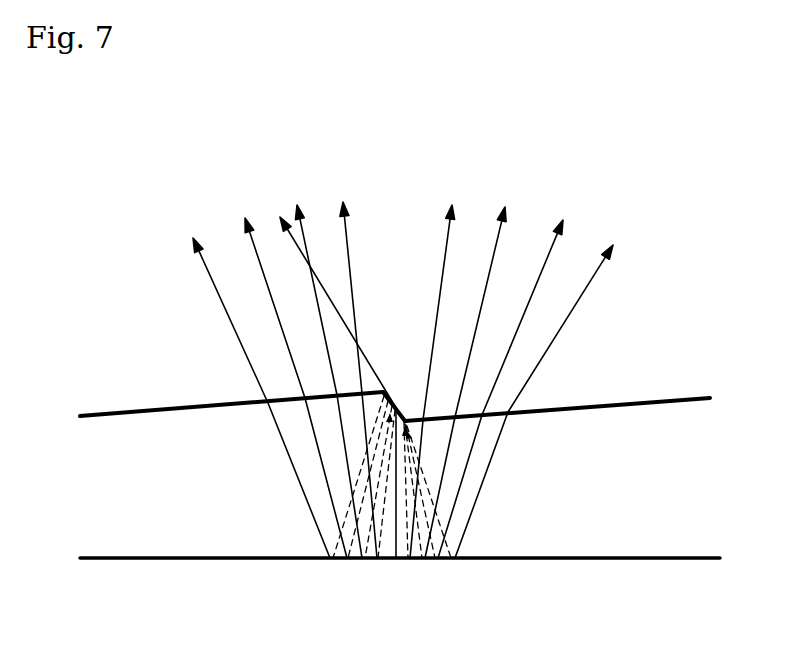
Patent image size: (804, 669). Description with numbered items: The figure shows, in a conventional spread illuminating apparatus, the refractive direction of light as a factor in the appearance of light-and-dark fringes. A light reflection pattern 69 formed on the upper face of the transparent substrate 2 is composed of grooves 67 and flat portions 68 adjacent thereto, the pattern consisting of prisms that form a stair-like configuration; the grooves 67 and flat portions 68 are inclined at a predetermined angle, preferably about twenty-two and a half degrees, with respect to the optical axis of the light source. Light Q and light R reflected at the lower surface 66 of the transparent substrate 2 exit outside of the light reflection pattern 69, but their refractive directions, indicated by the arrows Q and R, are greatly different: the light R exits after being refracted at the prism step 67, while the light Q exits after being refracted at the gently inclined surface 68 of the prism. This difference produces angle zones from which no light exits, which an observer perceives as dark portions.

The transparent substrate 2 is at (158, 435).
The lower surface 66 is at (160, 560).
The groove 67 is at (407, 420).
The flat portion 68 is at (658, 401).
The light reflection pattern 69 is at (574, 323).
The light Q is at (247, 214).
The light R is at (283, 211).